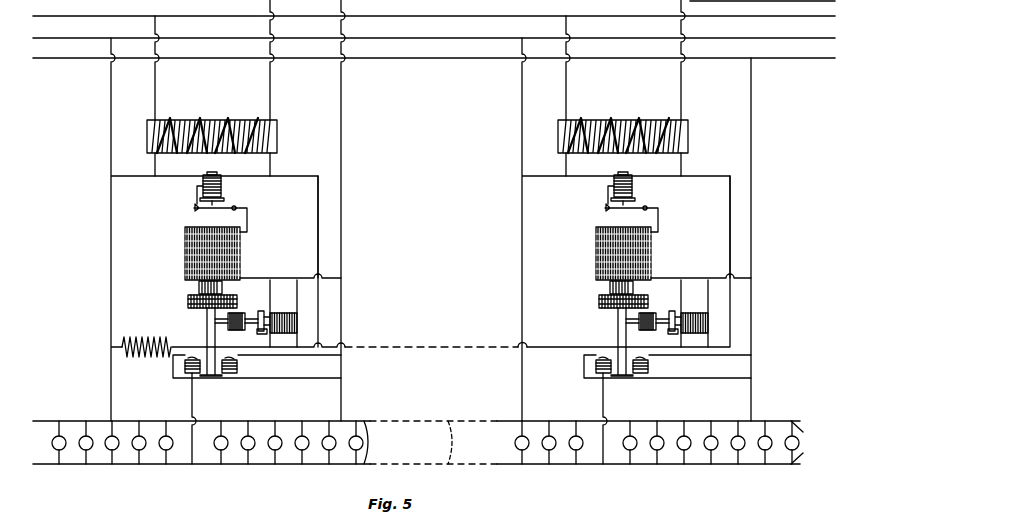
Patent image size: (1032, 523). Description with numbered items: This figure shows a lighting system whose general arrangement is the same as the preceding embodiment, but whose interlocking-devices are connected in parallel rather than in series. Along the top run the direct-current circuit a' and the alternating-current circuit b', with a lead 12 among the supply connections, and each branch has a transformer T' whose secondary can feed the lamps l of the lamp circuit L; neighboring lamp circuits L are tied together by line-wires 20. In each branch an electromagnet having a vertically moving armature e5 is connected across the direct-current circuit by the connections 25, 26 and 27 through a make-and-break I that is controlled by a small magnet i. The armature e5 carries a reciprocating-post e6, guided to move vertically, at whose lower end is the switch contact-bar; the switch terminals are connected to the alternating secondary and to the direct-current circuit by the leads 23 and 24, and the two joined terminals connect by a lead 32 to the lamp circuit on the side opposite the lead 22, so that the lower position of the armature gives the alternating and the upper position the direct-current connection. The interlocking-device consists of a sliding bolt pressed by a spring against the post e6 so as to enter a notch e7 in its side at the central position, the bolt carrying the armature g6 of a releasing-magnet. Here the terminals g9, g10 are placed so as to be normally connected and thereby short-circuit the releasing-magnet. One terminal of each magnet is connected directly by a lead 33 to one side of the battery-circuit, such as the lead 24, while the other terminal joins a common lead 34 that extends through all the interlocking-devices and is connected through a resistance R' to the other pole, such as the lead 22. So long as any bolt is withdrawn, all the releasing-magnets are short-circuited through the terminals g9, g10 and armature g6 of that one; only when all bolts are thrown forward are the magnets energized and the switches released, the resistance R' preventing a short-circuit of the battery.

The direct-current circuit a' is at (434, 8).
The alternating-current circuit b' is at (434, 49).
The lead 12 is at (118, 178).
The transformer T' is at (429, 88).
The lead 22 is at (111, 277).
The lead 23 is at (318, 236).
The lead 24 is at (341, 207).
The connection 25 is at (301, 276).
The connection 26 is at (247, 221).
The connection 27 is at (174, 178).
The magnet i is at (221, 188).
The make-and-break I is at (196, 209).
The armature e5 is at (188, 300).
The reciprocating-post e6 is at (207, 337).
The notch e7 is at (205, 326).
The armature g6 is at (240, 331).
The terminal g9 is at (268, 333).
The terminal g10 is at (261, 316).
The lead 33 is at (305, 300).
The resistance R' is at (146, 356).
The lead 32 is at (603, 402).
The lead 34 is at (372, 347).
The lamp circuit L is at (426, 442).
The lamps l is at (273, 452).
The line-wires 20 is at (433, 442).